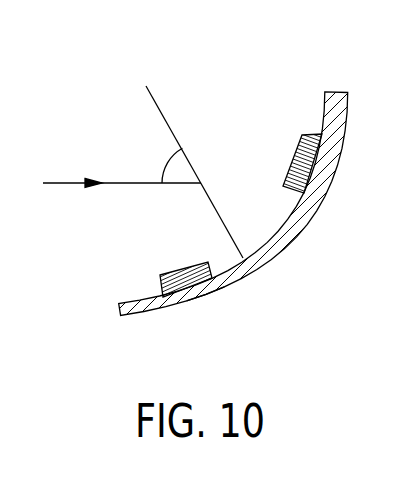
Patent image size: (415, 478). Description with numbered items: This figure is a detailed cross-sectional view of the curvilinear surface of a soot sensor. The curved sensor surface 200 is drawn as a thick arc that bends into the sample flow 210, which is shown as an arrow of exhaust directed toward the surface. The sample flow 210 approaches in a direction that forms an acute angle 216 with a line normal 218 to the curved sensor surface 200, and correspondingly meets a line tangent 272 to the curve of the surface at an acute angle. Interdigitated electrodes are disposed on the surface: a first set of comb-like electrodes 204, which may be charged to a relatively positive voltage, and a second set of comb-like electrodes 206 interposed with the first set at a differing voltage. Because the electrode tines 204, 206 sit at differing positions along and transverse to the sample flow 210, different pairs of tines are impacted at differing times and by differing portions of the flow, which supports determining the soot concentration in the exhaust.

The curved sensor surface 200 is at (343, 88).
The first set of comb-like electrodes 204 is at (162, 278).
The second set of comb-like electrodes 206 is at (300, 148).
The sample flow 210 is at (75, 185).
The acute angle 216 is at (170, 157).
The line normal 218 is at (155, 100).
The line tangent 272 is at (205, 300).